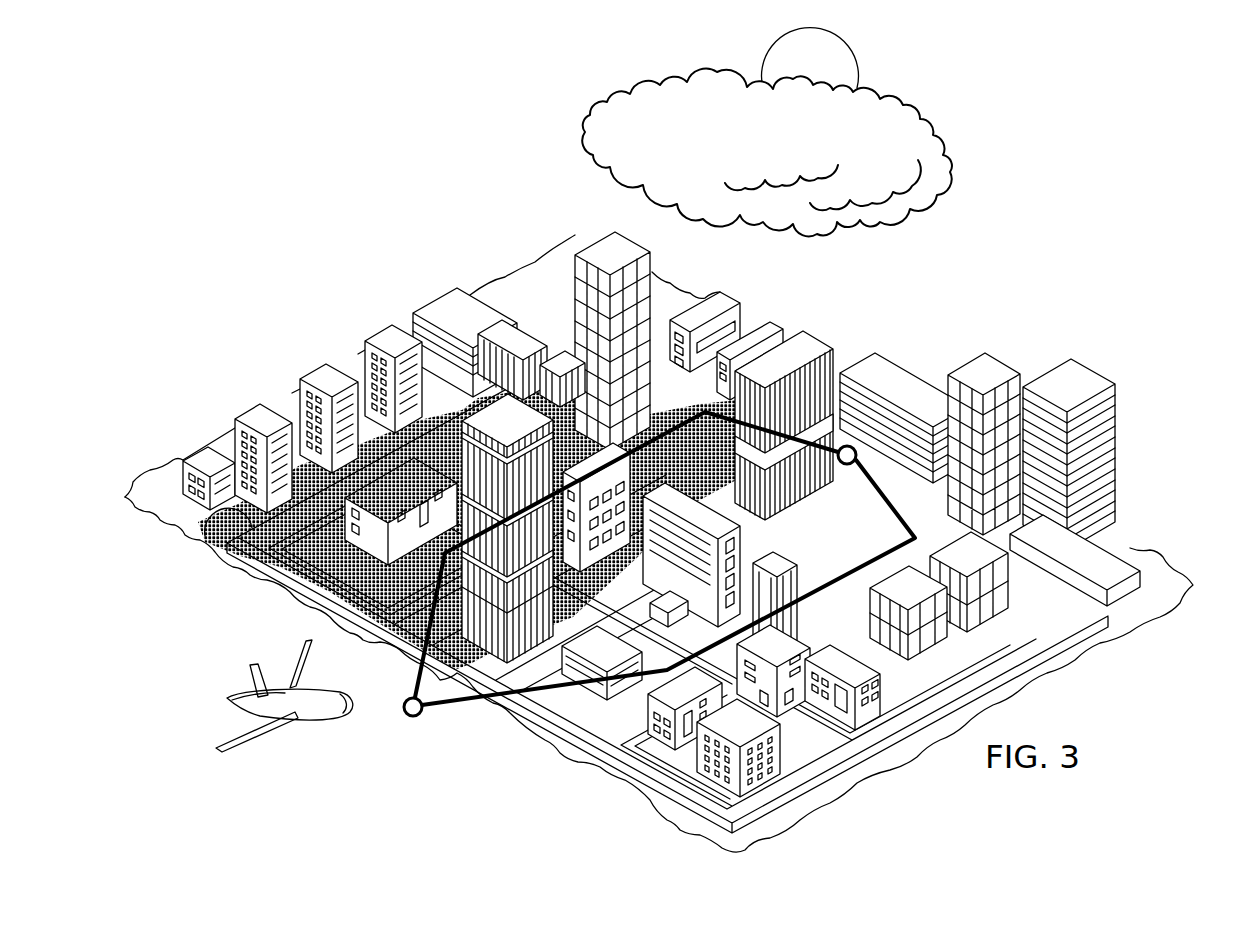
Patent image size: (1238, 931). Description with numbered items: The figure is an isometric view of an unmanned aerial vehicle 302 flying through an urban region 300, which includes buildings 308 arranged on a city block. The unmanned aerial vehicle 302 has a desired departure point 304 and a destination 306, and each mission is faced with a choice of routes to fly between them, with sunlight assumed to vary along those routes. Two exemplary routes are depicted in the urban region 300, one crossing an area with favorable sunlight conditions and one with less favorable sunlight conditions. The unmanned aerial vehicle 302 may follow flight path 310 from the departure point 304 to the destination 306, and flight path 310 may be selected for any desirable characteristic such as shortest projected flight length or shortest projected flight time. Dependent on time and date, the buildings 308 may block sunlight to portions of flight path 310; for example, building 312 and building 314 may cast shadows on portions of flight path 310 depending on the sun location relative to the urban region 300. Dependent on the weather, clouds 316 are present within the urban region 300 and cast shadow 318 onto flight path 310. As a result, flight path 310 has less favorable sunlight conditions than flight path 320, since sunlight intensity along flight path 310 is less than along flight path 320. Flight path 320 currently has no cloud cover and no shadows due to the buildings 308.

The urban region 300 is at (326, 182).
The unmanned aerial vehicle 302 is at (320, 725).
The departure point 304 is at (413, 717).
The destination 306 is at (855, 451).
The buildings 308 is at (1046, 355).
The flight path 310 is at (596, 472).
The building 312 is at (527, 345).
The building 314 is at (650, 276).
The clouds 316 is at (920, 130).
The shadow 318 is at (220, 522).
The flight path 320 is at (840, 576).